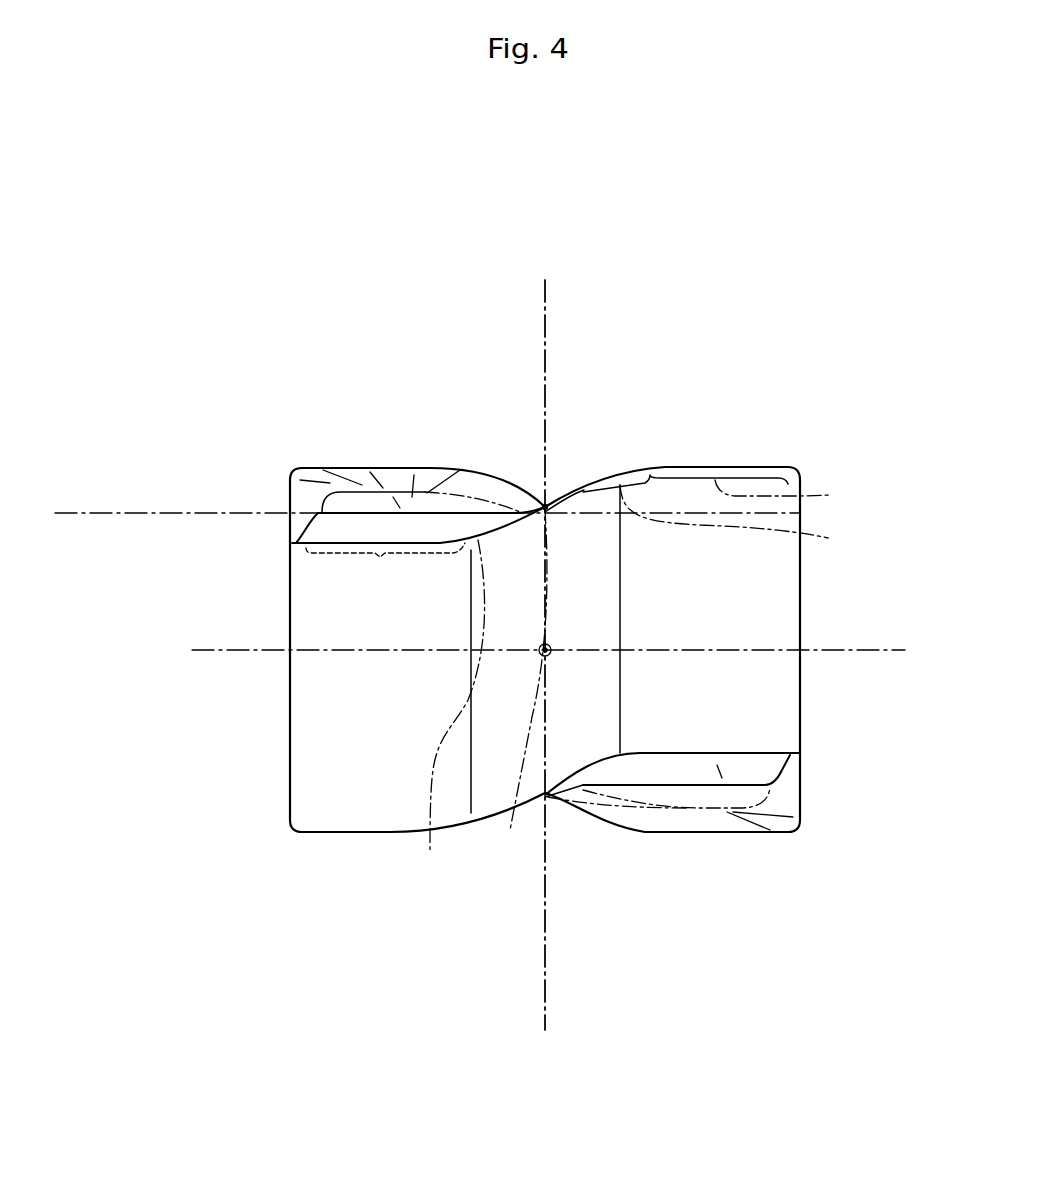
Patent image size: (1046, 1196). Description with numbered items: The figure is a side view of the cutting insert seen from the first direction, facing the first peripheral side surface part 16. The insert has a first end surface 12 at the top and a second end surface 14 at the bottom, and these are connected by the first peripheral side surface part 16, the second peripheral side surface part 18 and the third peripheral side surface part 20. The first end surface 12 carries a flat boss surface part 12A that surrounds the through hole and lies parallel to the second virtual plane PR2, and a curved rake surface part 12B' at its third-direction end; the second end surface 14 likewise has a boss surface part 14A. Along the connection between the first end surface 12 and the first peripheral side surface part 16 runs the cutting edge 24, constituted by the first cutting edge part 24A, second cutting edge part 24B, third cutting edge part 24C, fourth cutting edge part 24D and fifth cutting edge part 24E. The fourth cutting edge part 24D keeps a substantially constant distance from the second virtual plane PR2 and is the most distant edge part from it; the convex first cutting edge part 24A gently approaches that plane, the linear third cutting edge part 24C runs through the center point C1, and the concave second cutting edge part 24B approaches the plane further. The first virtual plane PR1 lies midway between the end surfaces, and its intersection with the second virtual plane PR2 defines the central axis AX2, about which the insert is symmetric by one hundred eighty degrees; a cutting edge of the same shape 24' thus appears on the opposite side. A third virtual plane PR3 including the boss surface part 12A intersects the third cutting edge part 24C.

The first end surface 12 is at (637, 428).
The second end surface 14 is at (572, 916).
The first peripheral side surface part 16 is at (358, 768).
The second peripheral side surface part 18 is at (813, 677).
The third peripheral side surface part 20 is at (270, 705).
The cutting edge 24 is at (567, 588).
The partition wall fold region 24' is at (350, 442).
The first cutting edge part 24A is at (749, 520).
The second cutting edge part 24B is at (445, 714).
The third cutting edge part 24C is at (542, 555).
The fourth cutting edge part 24D is at (802, 498).
The fifth cutting edge part 24E is at (380, 556).
The boss surface part 12A is at (460, 470).
The rake surface part 12B' is at (434, 428).
The boss surface part 14A is at (692, 787).
The center point C1 is at (546, 505).
The central axis AX2 is at (518, 756).
The first virtual plane PR1 is at (548, 325).
The second virtual plane PR2 is at (882, 648).
The third virtual plane PR3 is at (60, 513).